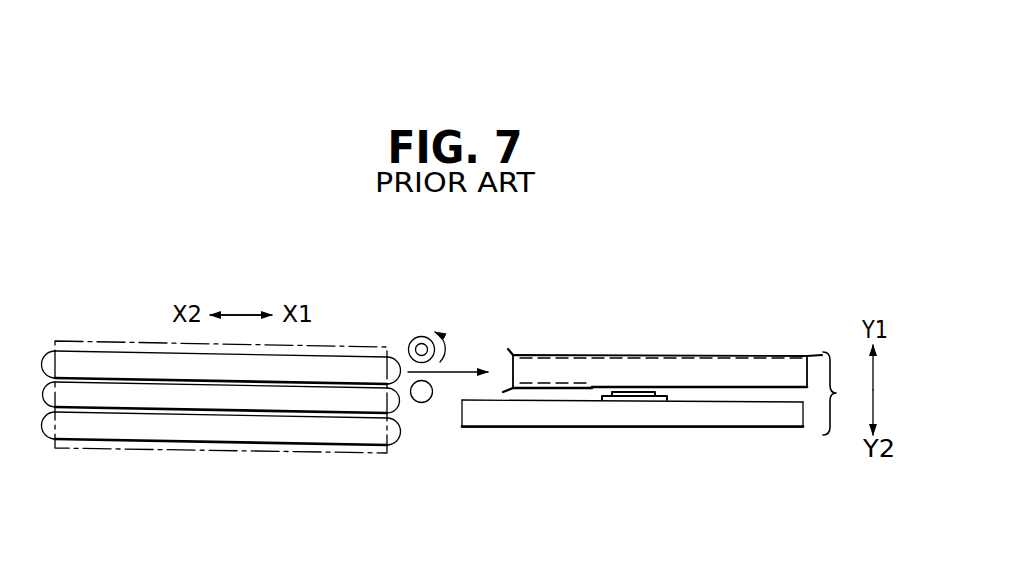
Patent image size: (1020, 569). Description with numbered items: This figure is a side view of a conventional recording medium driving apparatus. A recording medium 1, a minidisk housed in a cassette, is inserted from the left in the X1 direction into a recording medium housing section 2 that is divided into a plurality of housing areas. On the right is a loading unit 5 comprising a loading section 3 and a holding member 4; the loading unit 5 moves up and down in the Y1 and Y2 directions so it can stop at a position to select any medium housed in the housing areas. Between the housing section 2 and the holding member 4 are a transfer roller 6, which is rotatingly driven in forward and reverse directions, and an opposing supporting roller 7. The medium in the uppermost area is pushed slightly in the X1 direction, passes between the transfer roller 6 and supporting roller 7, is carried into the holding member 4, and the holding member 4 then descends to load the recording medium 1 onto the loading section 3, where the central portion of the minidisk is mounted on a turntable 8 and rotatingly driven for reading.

The recording medium 1 is at (156, 425).
The recording medium housing section 2 is at (253, 453).
The loading section 3 is at (578, 415).
The holding member 4 is at (672, 372).
The loading unit 5 is at (841, 393).
The transfer roller 6 is at (419, 337).
The supporting roller 7 is at (421, 403).
The turntable 8 is at (638, 400).